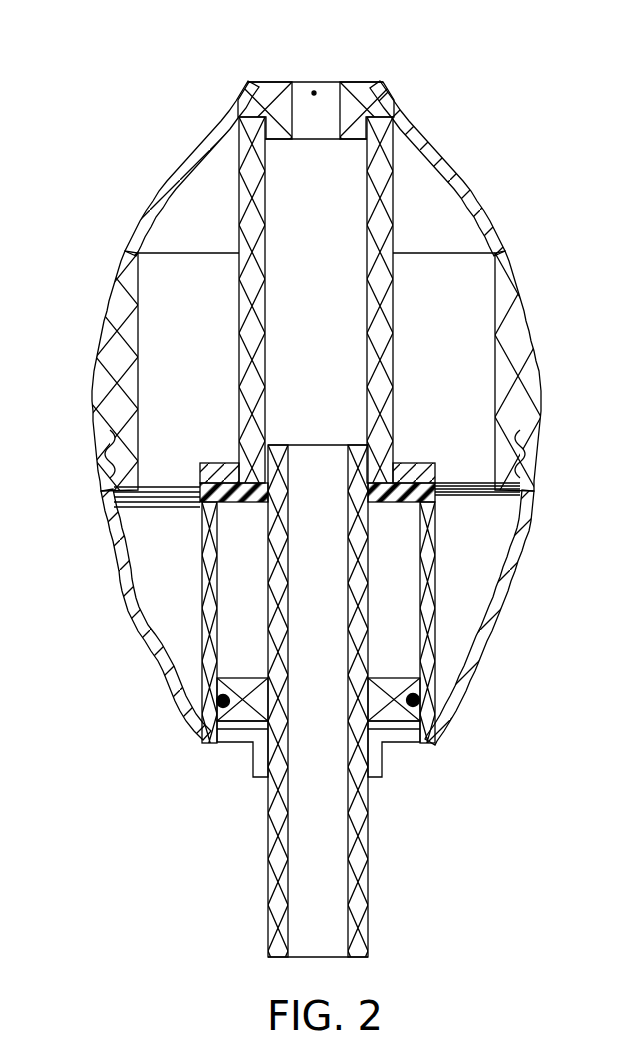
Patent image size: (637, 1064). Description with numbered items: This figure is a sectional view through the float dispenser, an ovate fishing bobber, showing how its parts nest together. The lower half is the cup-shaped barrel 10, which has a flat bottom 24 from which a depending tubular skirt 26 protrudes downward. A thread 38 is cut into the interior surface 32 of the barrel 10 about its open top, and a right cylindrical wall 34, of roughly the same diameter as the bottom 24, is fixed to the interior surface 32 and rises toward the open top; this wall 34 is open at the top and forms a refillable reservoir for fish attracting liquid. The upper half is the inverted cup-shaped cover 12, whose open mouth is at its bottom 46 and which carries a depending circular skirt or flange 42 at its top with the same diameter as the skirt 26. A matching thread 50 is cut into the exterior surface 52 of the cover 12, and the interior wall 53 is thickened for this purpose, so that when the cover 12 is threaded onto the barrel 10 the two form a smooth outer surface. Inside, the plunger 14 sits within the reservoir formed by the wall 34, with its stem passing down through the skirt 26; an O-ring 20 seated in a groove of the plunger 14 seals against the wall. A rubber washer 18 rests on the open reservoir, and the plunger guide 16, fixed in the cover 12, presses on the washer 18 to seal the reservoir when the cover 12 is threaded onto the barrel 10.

The barrel 10 is at (512, 552).
The cover 12 is at (497, 225).
The plunger 14 is at (357, 880).
The plunger guide 16 is at (385, 327).
The rubber washer 18 is at (403, 508).
The O-ring 20 is at (420, 698).
The flat bottom 24 is at (233, 747).
The depending tubular skirt 26 is at (377, 768).
The interior surface 32 is at (133, 573).
The right cylindrical wall 34 is at (207, 580).
The thread 38 is at (120, 467).
The depending circular skirt or flange 42 is at (368, 110).
The bottom of cover 46 is at (365, 82).
The thread 50 is at (110, 467).
The exterior surface 52 is at (102, 385).
The interior wall 53 is at (140, 350).